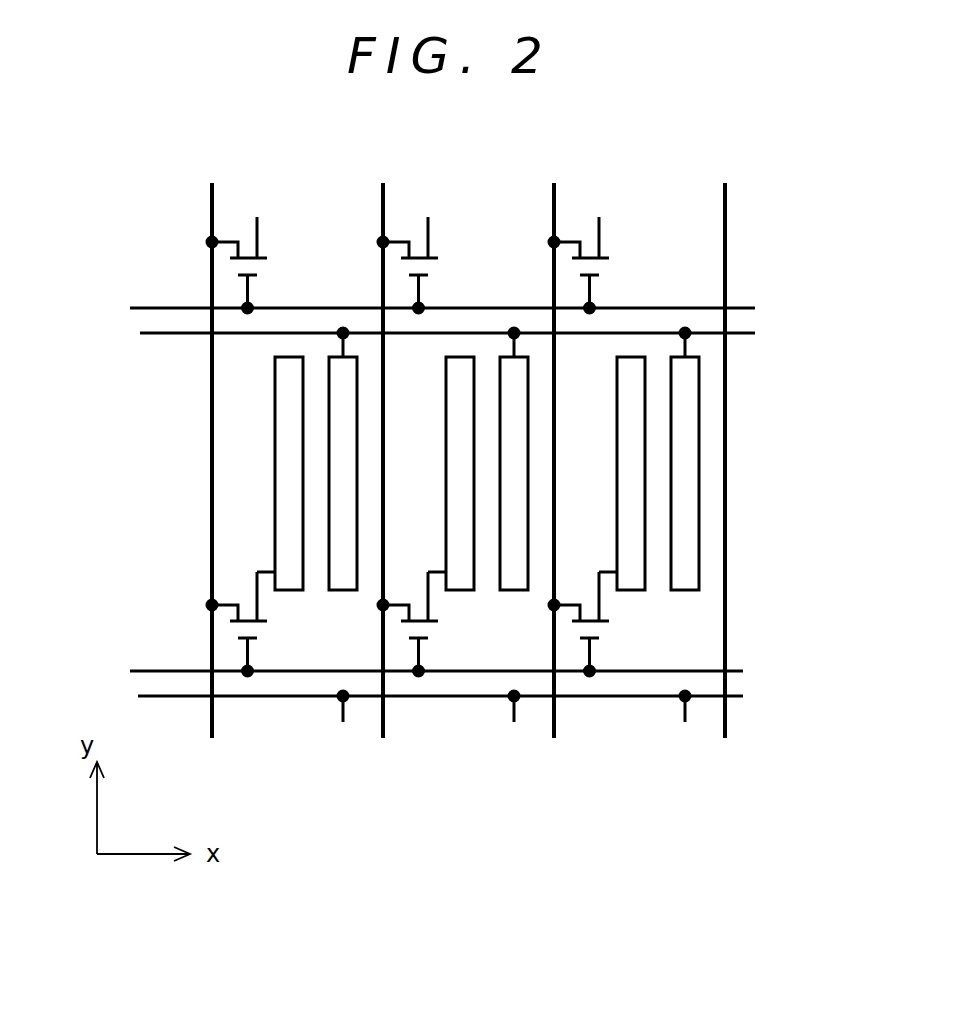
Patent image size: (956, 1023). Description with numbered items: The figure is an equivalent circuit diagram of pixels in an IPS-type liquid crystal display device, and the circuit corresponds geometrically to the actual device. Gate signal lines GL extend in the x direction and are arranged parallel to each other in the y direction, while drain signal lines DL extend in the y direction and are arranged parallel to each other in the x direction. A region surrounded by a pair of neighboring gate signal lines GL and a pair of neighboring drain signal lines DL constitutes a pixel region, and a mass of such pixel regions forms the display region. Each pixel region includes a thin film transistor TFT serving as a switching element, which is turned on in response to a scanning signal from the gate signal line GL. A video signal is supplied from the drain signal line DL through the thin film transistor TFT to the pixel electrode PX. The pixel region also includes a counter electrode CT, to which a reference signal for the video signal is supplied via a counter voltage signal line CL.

The drain signal line DL is at (212, 280).
The gate signal line GL is at (740, 308).
The counter voltage signal line CL is at (180, 334).
The thin film transistor TFT is at (275, 636).
The pixel electrode PX is at (273, 435).
The counter electrode CT is at (328, 487).